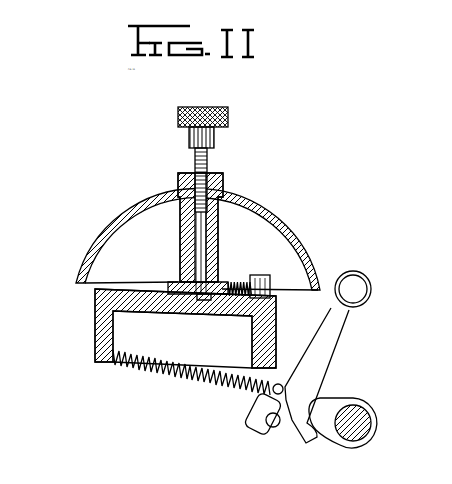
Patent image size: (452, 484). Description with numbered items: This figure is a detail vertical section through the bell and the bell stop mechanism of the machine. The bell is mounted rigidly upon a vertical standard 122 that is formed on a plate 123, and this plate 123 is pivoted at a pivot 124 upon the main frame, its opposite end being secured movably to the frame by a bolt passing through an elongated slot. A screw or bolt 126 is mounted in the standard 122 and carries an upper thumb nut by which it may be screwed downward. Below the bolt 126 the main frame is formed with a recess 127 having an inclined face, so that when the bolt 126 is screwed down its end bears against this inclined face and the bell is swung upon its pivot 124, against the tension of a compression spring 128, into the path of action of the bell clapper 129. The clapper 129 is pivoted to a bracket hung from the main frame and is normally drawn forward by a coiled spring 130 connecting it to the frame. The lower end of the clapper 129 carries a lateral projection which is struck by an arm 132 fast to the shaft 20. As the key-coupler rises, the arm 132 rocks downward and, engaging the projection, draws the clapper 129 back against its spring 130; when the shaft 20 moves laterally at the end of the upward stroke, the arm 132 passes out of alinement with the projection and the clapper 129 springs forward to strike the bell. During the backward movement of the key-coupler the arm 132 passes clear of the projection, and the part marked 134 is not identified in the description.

The shaft 20 is at (375, 419).
The vertical standard 122 is at (184, 245).
The plate 123 is at (166, 282).
The pivot 124 is at (147, 226).
The screw or bolt 126 is at (195, 160).
The recess 127 is at (198, 304).
The compression spring 128 is at (240, 289).
The bell clapper 129 is at (365, 289).
The coiled spring 130 is at (182, 373).
The arm 132 is at (330, 400).
The pivot block 134 is at (300, 442).